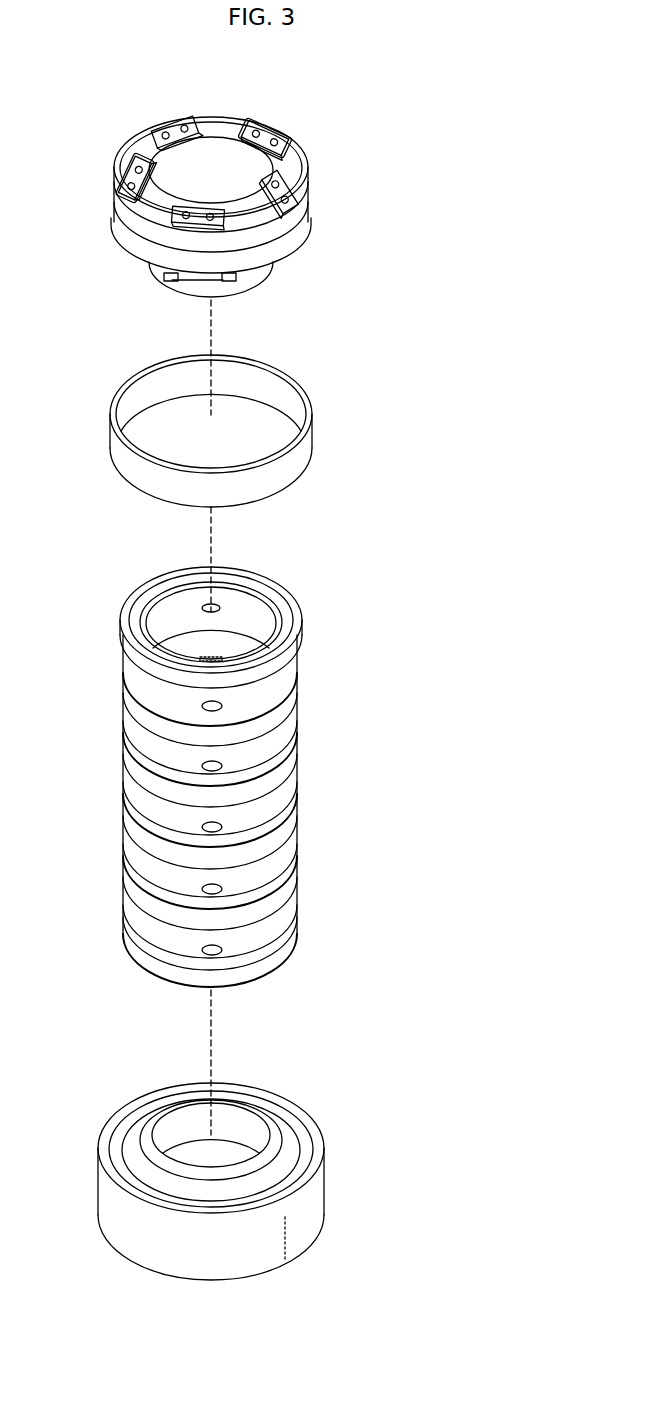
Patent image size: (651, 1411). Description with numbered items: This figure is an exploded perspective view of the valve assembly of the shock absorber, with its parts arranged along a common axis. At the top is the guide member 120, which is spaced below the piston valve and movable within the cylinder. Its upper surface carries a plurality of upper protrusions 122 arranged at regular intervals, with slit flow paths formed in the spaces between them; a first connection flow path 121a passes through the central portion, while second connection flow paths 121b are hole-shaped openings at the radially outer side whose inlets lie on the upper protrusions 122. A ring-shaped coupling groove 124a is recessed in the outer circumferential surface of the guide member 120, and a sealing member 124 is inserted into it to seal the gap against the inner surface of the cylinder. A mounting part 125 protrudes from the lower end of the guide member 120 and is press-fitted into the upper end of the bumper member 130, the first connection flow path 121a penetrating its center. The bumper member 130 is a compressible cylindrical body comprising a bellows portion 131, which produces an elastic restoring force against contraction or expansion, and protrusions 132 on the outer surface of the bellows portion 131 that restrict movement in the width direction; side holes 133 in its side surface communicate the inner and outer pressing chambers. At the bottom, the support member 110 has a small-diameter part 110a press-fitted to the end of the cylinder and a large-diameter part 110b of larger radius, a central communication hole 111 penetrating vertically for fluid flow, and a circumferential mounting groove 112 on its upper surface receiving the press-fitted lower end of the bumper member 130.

The support member 110 is at (386, 1122).
The small-diameter part 110a is at (307, 1163).
The large-diameter part 110b is at (318, 1218).
The communication hole 111 is at (234, 1120).
The mounting groove 112 is at (288, 1140).
The guide member 120 is at (388, 146).
The first connection flow path 121a is at (252, 152).
The second connection flow path 121b is at (126, 166).
The upper protrusion 122 is at (247, 127).
The sealing member 124 is at (304, 452).
The coupling groove 124a is at (280, 240).
The mounting part 125 is at (178, 288).
The bumper member 130 is at (358, 637).
The bellows portion 131 is at (148, 929).
The protrusion 132 is at (274, 944).
The side hole 133 is at (216, 604).